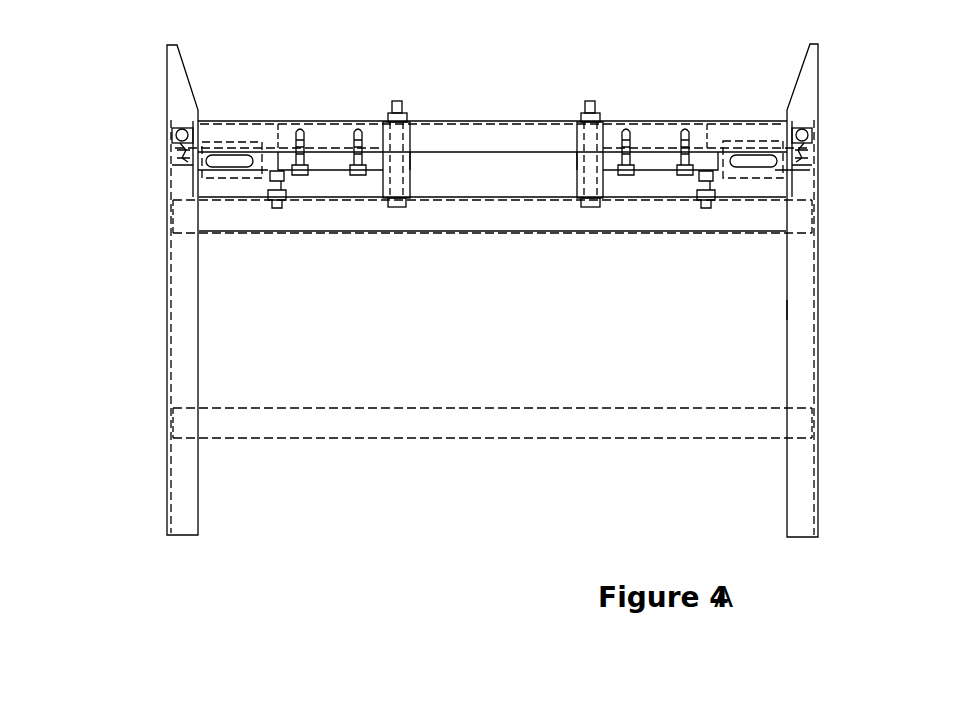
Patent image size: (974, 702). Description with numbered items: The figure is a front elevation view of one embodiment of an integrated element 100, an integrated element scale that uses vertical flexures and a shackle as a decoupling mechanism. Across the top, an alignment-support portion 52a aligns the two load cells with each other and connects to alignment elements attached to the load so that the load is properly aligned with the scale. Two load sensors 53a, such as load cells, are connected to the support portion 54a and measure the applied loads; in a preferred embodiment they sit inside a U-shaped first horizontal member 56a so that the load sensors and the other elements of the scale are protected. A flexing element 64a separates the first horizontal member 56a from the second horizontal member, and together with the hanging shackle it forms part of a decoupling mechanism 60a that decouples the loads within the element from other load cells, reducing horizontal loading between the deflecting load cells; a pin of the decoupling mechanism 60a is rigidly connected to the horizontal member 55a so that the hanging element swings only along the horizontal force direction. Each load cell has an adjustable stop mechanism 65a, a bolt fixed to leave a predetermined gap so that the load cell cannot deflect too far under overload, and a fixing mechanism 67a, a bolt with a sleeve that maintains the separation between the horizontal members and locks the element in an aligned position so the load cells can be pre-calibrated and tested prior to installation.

The integrated element 100 is at (850, 207).
The alignment-support portion 52a is at (817, 102).
The support portion 54a is at (817, 308).
The first horizontal member 56a is at (490, 135).
The horizontal member 55a is at (498, 218).
The load sensor 53a is at (240, 143).
The fixing mechanism 67a is at (410, 132).
The adjustable stop mechanism 65a is at (273, 182).
The decoupling mechanism 60a is at (136, 145).
The flexing element 64a is at (183, 182).